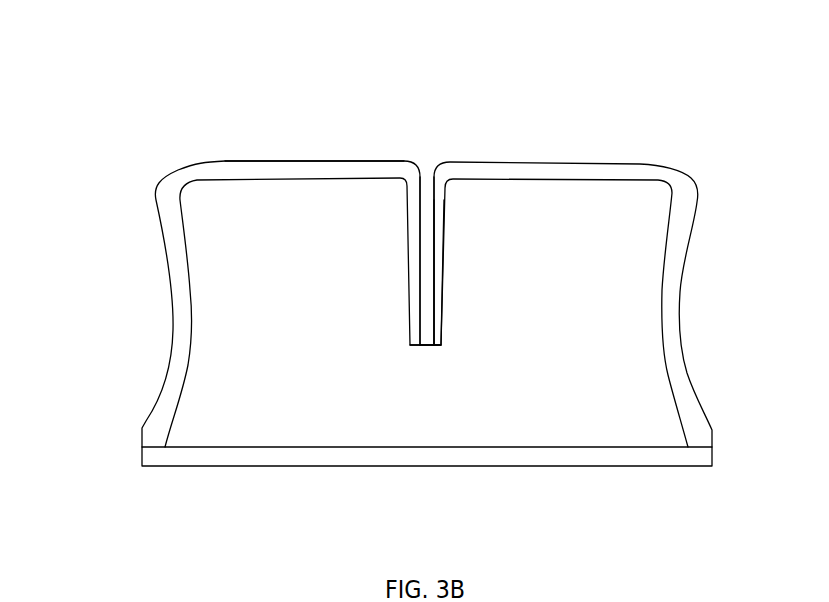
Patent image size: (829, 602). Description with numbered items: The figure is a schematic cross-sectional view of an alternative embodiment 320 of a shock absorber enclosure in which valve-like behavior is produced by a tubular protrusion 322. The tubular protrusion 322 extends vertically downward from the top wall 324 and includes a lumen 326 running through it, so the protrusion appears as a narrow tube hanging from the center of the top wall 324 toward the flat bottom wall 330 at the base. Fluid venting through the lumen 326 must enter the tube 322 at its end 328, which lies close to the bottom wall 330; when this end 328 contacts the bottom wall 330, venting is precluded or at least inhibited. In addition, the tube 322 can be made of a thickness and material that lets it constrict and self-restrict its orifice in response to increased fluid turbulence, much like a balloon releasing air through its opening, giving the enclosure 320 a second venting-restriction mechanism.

The shock absorber enclosure embodiment 320 is at (157, 100).
The tubular protrusion 322 is at (444, 264).
The top wall 324 is at (297, 161).
The lumen 326 is at (424, 164).
The end of the tube 328 is at (423, 340).
The bottom wall 330 is at (612, 466).